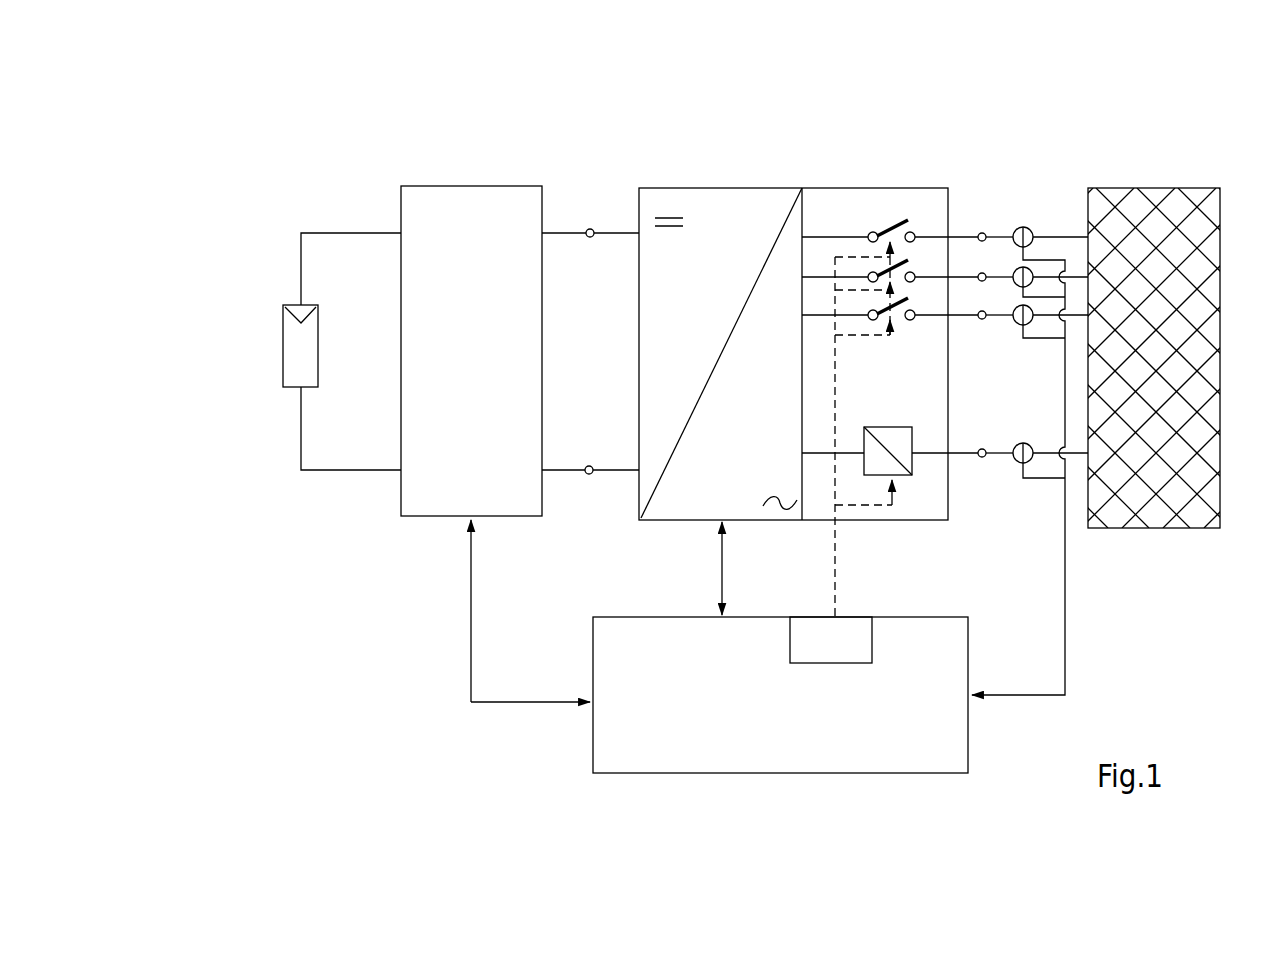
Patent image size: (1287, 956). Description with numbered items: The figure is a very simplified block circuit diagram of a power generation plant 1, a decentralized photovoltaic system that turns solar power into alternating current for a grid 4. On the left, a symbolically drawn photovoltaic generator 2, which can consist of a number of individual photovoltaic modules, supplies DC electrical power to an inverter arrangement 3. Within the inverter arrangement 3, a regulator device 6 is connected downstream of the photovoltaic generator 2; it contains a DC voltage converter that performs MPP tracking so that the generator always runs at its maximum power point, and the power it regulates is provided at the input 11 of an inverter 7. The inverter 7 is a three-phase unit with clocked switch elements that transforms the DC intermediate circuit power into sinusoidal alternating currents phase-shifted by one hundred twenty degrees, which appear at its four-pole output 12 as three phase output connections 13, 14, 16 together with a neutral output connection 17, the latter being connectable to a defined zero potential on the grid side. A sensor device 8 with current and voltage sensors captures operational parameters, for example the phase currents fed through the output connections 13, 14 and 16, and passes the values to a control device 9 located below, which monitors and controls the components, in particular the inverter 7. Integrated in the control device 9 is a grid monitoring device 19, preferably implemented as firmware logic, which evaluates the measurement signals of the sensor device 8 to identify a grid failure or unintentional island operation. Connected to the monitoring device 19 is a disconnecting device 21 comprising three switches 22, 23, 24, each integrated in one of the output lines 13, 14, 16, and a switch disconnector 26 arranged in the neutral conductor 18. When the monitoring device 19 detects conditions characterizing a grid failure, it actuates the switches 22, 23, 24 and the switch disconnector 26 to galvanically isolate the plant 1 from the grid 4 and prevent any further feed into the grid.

The power generation plant 1 is at (288, 181).
The photovoltaic generator 2 is at (266, 347).
The inverter arrangement 3 is at (631, 175).
The grid 4 is at (1153, 210).
The regulator device 6 is at (447, 217).
The inverter 7 is at (738, 215).
The sensor device 8 is at (1054, 216).
The control device 9 is at (688, 743).
The input 11 is at (623, 312).
The output 12 is at (815, 230).
The output connection L1 13 is at (983, 230).
The output connection L2 14 is at (983, 272).
The output connection L3 16 is at (983, 310).
The neutral output connection 17 is at (984, 459).
The neutral conductor 18 is at (1002, 458).
The monitoring device 19 is at (842, 660).
The disconnecting device 21 is at (865, 181).
The switch 22 is at (883, 233).
The switch 23 is at (905, 262).
The switch 24 is at (898, 300).
The switch disconnector 26 is at (898, 448).